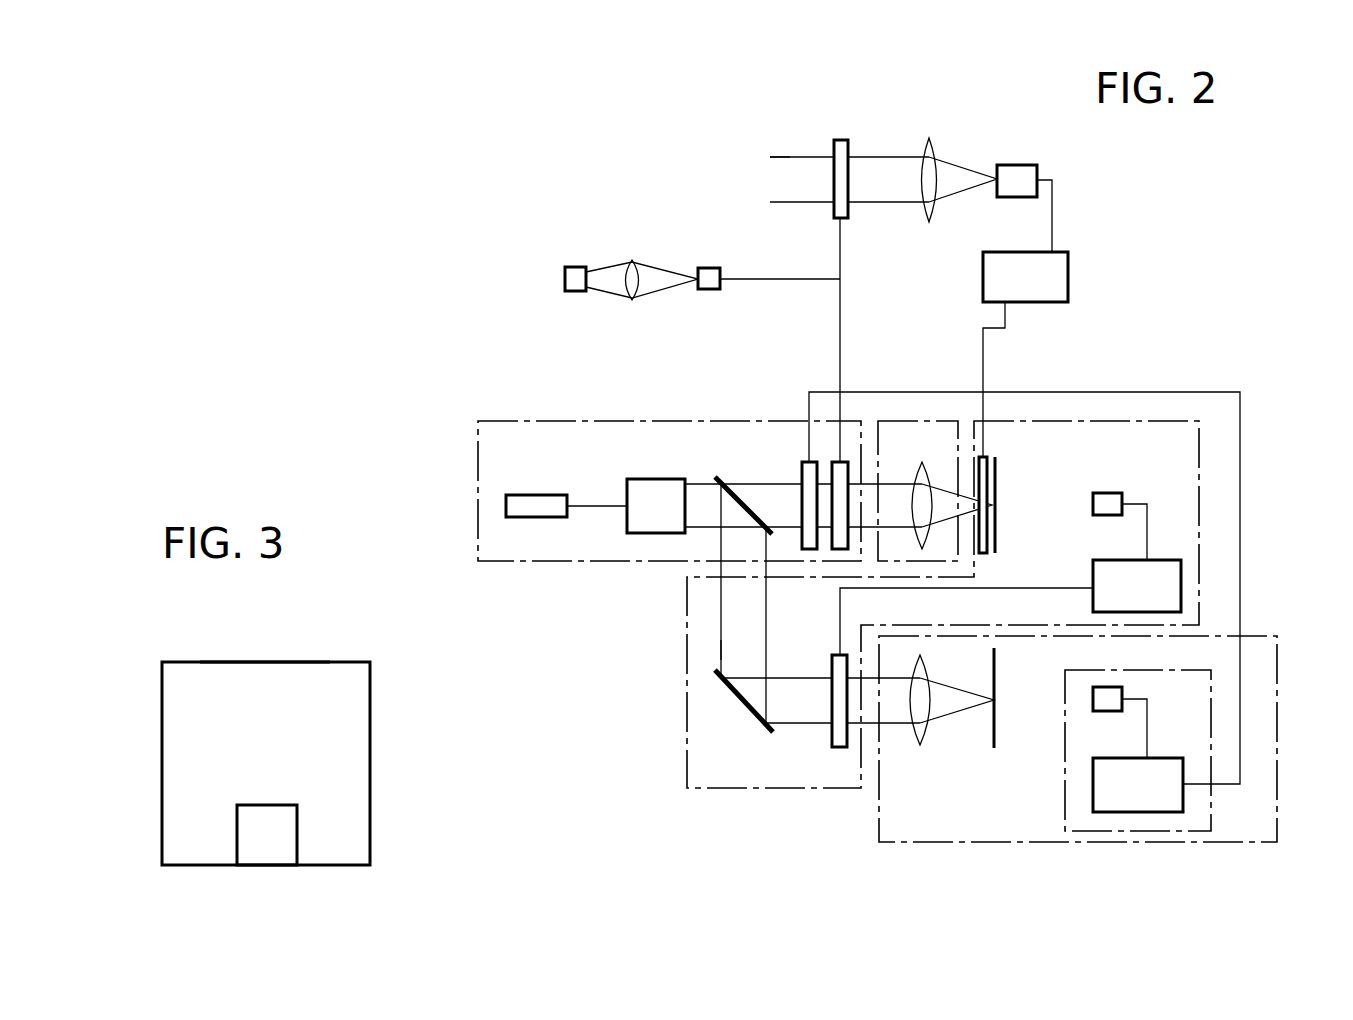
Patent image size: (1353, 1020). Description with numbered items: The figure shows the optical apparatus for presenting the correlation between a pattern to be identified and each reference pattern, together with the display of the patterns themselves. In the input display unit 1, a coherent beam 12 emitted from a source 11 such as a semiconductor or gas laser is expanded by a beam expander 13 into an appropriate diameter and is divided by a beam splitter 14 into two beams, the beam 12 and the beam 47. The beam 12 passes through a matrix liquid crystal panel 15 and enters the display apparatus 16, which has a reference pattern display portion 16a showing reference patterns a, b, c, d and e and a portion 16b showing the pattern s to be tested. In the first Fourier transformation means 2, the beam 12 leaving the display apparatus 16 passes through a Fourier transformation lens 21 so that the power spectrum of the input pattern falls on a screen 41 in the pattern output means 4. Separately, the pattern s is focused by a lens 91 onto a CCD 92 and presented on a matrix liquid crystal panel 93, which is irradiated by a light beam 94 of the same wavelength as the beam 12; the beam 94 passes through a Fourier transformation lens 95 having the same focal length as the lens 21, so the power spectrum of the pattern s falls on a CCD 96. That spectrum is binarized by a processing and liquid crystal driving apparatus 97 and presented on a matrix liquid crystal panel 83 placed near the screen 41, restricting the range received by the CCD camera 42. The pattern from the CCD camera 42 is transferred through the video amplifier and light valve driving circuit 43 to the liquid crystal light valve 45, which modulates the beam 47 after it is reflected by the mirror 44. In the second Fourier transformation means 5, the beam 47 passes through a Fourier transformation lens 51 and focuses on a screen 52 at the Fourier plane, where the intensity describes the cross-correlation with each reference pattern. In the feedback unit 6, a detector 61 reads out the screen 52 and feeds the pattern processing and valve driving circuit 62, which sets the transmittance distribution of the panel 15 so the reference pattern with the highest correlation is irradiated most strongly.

In FIG. 2, the input pattern display 1 is at (513, 421).
In FIG. 2, the source 11 is at (528, 495).
In FIG. 2, the coherent beam 12 is at (595, 506).
In FIG. 2, the beam expander 13 is at (648, 479).
In FIG. 2, the beam splitter 14 is at (718, 478).
In FIG. 2, the matrix liquid crystal panel 15 is at (806, 462).
In FIG. 2, the display apparatus 16 is at (838, 462).
In FIG. 3, the display apparatus 16 is at (162, 720).
In FIG. 3, the reference pattern display portion 16a is at (253, 670).
In FIG. 3, the portion to display a pattern to be identified 16b is at (265, 858).
In FIG. 2, the first Fourier transformation means 2 is at (893, 421).
In FIG. 2, the Fourier transformation lens 21 is at (922, 467).
In FIG. 2, the matrix liquid crystal panel 83 is at (984, 457).
In FIG. 2, the pattern output means 4 is at (1122, 421).
In FIG. 2, the screen 41 is at (997, 470).
In FIG. 2, the CCD camera 42 is at (1110, 493).
In FIG. 2, the video amplifier and liquid crystal light valve driving circuit 43 is at (1181, 587).
In FIG. 2, the mirror 44 is at (737, 697).
In FIG. 2, the liquid crystal light valve 45 is at (836, 748).
In FIG. 2, the beam 47 is at (720, 634).
In FIG. 2, the second Fourier transformation means 5 is at (940, 842).
In FIG. 2, the Fourier transformation lens 51 is at (925, 745).
In FIG. 2, the screen 52 is at (994, 748).
In FIG. 2, the feedback processor 6 is at (1211, 805).
In FIG. 2, the detector 61 is at (1093, 693).
In FIG. 2, the pattern processing and valve driving circuit 62 is at (1166, 758).
In FIG. 2, the lens 91 is at (632, 268).
In FIG. 2, the CCD 92 is at (708, 268).
In FIG. 2, the matrix liquid crystal panel 93 is at (841, 140).
In FIG. 2, the light beam 94 is at (790, 157).
In FIG. 2, the Fourier transformation lens 95 is at (930, 140).
In FIG. 2, the CCD 96 is at (1022, 165).
In FIG. 2, the processing and liquid crystal driving apparatus 97 is at (1068, 275).